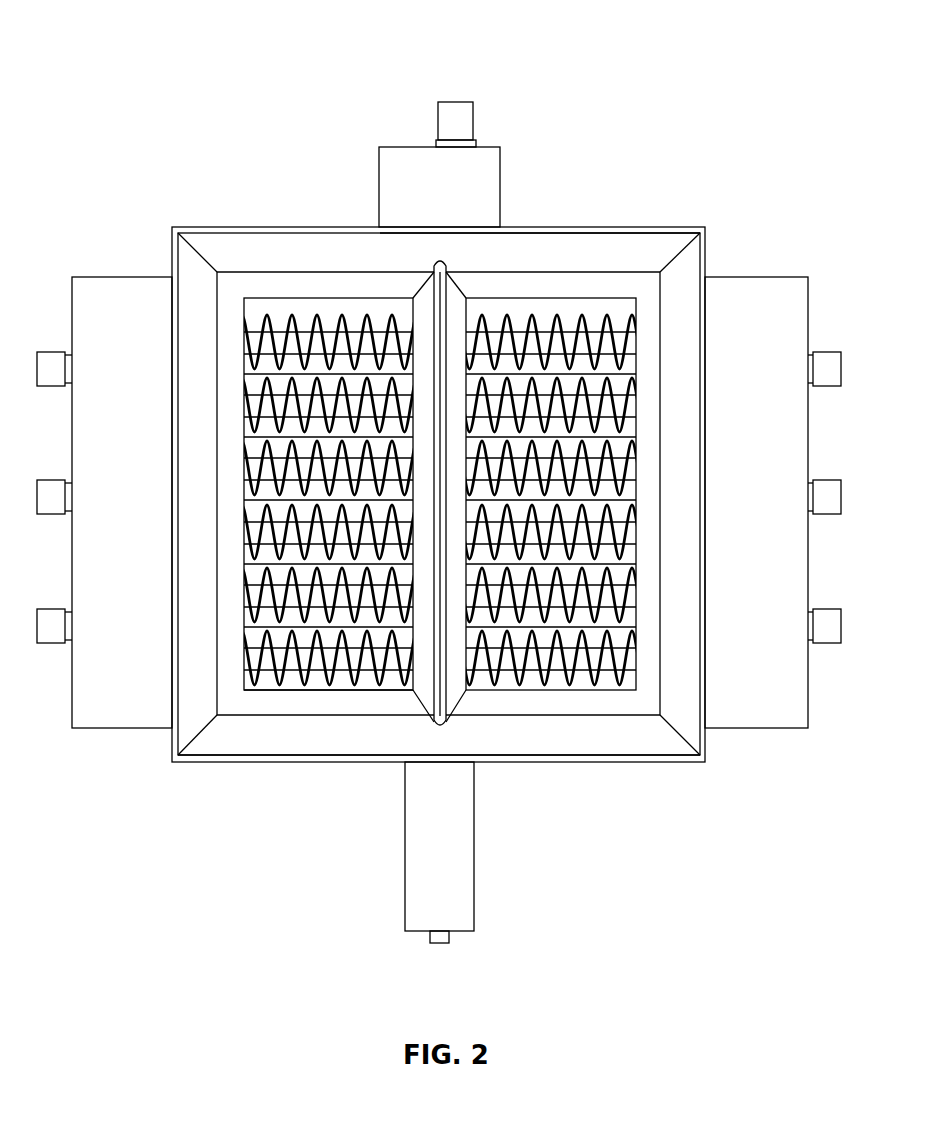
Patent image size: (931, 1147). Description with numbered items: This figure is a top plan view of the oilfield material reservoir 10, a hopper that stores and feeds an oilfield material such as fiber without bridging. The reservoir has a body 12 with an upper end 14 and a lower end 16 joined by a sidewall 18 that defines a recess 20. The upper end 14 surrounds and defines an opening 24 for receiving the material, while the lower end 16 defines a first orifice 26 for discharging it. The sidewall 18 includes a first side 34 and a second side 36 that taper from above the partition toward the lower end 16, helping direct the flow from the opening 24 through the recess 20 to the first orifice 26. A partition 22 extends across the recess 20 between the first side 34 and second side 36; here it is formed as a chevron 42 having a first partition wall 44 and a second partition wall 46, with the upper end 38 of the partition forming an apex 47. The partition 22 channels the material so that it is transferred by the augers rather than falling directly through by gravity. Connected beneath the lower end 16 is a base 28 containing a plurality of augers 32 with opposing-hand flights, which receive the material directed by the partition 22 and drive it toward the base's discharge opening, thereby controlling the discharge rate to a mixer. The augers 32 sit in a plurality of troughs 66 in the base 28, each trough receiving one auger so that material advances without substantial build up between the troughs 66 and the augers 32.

The oilfield material reservoir 10 is at (164, 58).
The body 12 is at (658, 250).
The upper end 14 is at (590, 231).
The lower end 16 is at (244, 320).
The sidewall 18 is at (240, 742).
The recess 20 is at (255, 247).
The partition 22 is at (458, 716).
The opening 24 is at (198, 258).
The first orifice 26 is at (326, 692).
The base 28 is at (748, 715).
The plurality of augers 32 is at (607, 667).
The first side 34 is at (353, 248).
The second side 36 is at (567, 737).
The upper end 38 is at (440, 720).
The chevron 42 is at (427, 695).
The first partition wall 44 is at (425, 297).
The second partition wall 46 is at (454, 297).
The apex 47 is at (448, 678).
The plurality of troughs 66 is at (247, 644).